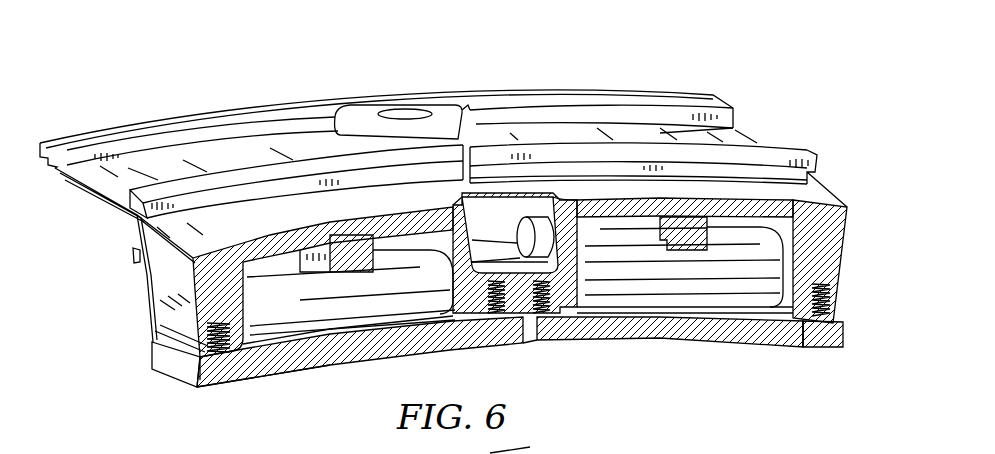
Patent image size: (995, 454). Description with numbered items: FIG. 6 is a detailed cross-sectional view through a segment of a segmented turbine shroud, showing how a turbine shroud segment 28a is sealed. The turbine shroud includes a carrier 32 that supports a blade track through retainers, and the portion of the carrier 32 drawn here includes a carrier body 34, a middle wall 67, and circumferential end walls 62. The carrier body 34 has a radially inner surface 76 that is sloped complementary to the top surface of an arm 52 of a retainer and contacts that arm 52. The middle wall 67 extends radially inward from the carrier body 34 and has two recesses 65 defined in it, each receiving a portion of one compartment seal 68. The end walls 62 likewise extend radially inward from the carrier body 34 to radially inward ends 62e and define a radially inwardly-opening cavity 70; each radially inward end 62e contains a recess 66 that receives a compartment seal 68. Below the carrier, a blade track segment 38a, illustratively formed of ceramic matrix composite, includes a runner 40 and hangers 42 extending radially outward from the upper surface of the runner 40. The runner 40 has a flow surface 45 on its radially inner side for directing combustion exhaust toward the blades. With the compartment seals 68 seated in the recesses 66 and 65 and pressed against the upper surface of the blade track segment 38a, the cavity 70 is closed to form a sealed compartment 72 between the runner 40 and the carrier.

The turbine shroud segment 28a is at (130, 60).
The carrier 32 is at (115, 80).
The carrier body 34 is at (220, 160).
The blade track segment 38a is at (795, 362).
The runner 40 is at (847, 333).
The hangers 42 is at (515, 281).
The flow surface 45 is at (500, 337).
The arm 52 is at (308, 264).
The circumferential end wall 62 is at (850, 220).
The radially inward end 62e is at (803, 324).
The recess 65 is at (460, 212).
The recess 66 is at (821, 280).
The middle wall 67 is at (517, 298).
The compartment seal 68 is at (217, 322).
The radially inwardly-opening cavity 70 is at (500, 326).
The sealed compartment 72 is at (622, 238).
The radially inner surface 76 is at (491, 277).